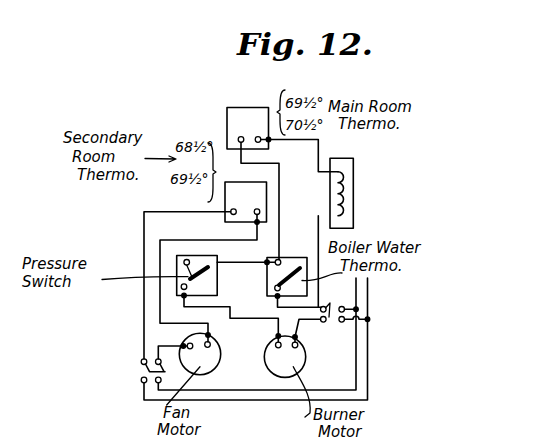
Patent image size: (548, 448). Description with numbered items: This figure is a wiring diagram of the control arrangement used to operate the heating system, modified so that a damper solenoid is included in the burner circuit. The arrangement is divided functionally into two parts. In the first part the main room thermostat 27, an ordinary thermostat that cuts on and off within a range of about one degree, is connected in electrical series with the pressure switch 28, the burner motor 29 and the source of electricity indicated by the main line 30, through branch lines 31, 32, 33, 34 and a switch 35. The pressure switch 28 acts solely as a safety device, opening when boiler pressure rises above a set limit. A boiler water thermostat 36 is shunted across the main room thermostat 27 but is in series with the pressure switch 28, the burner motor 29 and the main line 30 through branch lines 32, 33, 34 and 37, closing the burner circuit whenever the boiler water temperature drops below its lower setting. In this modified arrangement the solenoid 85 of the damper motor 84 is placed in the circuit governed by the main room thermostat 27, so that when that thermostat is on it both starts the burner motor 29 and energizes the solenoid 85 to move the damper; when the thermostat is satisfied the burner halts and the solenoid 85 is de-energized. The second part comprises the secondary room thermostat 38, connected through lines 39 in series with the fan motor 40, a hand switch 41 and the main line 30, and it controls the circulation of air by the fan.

The main room thermostat 27 is at (249, 129).
The secondary room thermostat 38 is at (246, 203).
The branch line 31 is at (280, 183).
The solenoid 85 is at (355, 193).
The damper motor 84 is at (357, 201).
The lines 39 is at (190, 212).
The branch line 32 is at (232, 262).
The thermostat 36 is at (282, 258).
The pressure switch 28 is at (210, 282).
The branch line 37 is at (275, 303).
The switch 35 is at (326, 306).
The main line 30 is at (354, 292).
The branch line 33 is at (245, 318).
The branch line 34 is at (300, 323).
The fan motor 40 is at (189, 353).
The burner motor 29 is at (284, 356).
The hand switch 41 is at (142, 366).